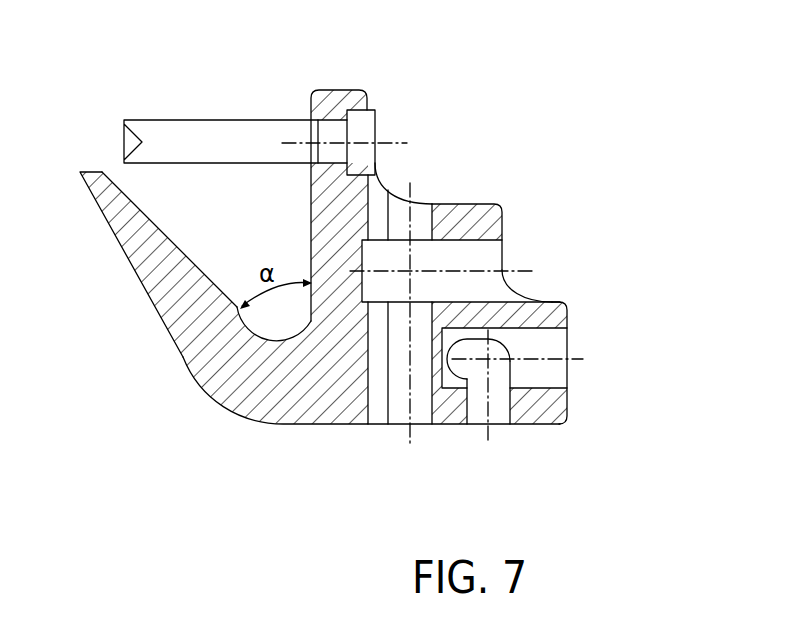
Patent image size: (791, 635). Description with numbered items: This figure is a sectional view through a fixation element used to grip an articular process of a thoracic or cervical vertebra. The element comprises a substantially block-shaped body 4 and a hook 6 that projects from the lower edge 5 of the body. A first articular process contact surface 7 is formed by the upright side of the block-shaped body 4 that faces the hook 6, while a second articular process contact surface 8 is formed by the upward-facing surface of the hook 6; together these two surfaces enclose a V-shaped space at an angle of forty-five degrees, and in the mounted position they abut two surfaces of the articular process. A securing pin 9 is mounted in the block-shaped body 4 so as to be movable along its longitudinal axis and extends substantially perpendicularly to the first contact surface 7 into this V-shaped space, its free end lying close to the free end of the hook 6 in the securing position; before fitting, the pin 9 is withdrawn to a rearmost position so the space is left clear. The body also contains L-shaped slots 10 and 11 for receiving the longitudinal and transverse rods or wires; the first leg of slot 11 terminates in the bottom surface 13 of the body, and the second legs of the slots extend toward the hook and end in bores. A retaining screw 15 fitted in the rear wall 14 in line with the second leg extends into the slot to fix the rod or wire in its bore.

The block-shaped body 4 is at (498, 205).
The lower edge 5 is at (295, 427).
The hook 6 is at (153, 267).
The first articular process contact surface 7 is at (308, 230).
The second articular process contact surface 8 is at (160, 232).
The securing pin 9 is at (183, 138).
The L-shaped slot 10 is at (417, 217).
The L-shaped slot 11 is at (493, 393).
The bottom surface 13 is at (542, 427).
The rear wall 14 is at (567, 322).
The retaining screw 15 is at (475, 427).